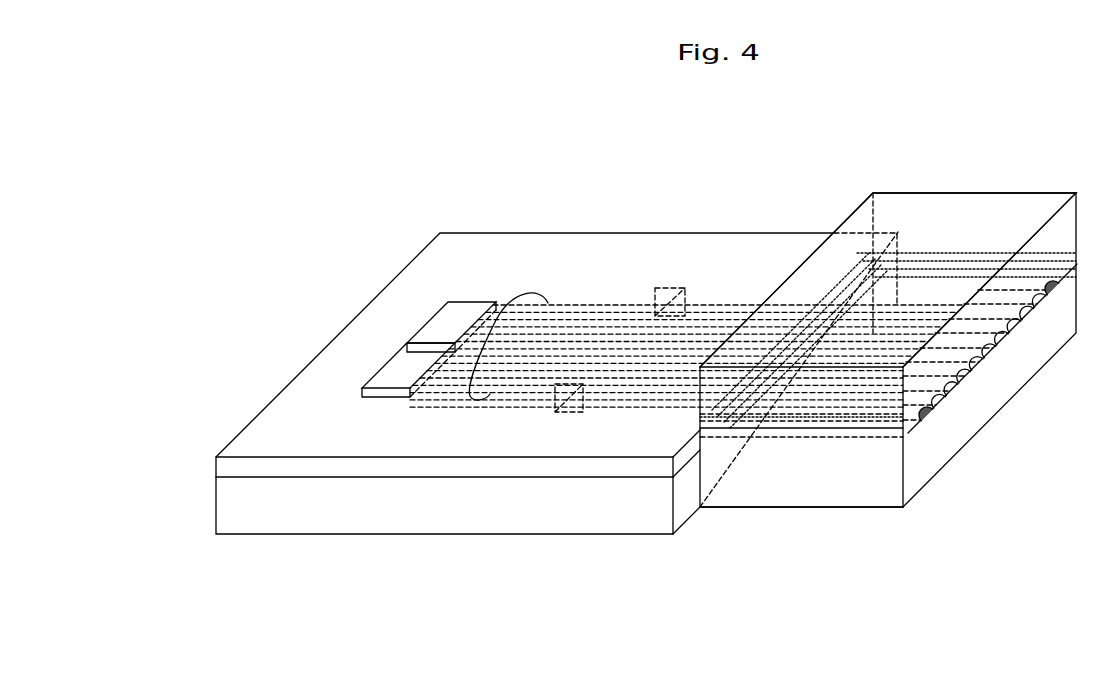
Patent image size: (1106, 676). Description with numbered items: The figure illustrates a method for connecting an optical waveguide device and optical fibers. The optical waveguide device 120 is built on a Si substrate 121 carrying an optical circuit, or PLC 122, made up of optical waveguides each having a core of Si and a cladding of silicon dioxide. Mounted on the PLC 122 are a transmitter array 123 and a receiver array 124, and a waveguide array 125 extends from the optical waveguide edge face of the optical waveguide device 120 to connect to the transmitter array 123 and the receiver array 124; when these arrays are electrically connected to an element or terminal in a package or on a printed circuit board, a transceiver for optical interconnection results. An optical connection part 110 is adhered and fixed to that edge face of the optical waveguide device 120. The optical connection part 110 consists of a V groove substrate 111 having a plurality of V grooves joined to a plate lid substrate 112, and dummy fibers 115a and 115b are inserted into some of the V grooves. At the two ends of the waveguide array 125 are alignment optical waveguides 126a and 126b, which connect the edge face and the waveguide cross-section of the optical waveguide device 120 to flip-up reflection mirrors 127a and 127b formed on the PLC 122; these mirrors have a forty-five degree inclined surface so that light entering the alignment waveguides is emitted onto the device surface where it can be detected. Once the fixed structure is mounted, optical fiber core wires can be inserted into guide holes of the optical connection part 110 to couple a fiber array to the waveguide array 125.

The optical connection part 110 is at (959, 192).
The V groove substrate 111 is at (800, 497).
The plate lid substrate 112 is at (1031, 206).
The dummy fiber 115a is at (937, 426).
The dummy fiber 115b is at (1058, 298).
The optical waveguide device 120 is at (746, 233).
The Si substrate 121 is at (293, 532).
The optical circuit (PLC) 122 is at (360, 467).
The transmitter array 123 is at (392, 364).
The receiver array 124 is at (438, 322).
The waveguide array 125 is at (523, 302).
The alignment optical waveguide 126a is at (642, 408).
The alignment optical waveguide 126b is at (742, 304).
The flip-up reflection mirror 127a is at (556, 412).
The flip-up reflection mirror 127b is at (652, 294).